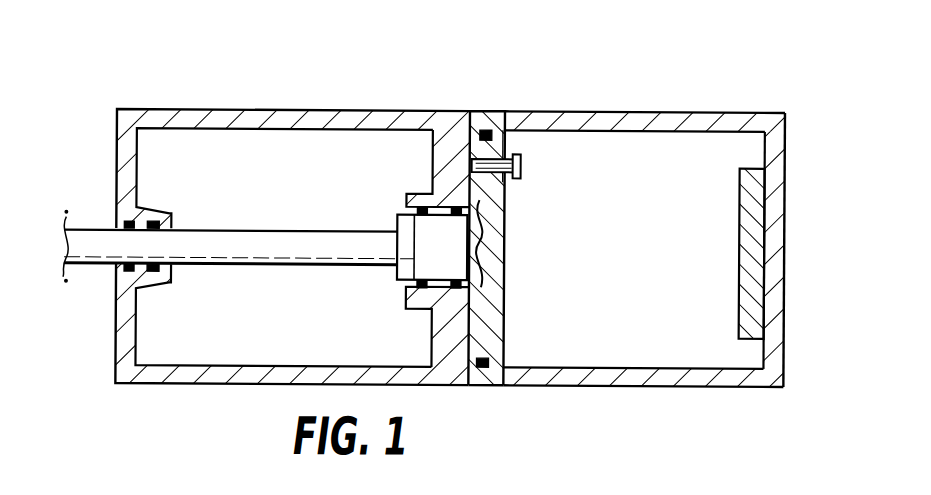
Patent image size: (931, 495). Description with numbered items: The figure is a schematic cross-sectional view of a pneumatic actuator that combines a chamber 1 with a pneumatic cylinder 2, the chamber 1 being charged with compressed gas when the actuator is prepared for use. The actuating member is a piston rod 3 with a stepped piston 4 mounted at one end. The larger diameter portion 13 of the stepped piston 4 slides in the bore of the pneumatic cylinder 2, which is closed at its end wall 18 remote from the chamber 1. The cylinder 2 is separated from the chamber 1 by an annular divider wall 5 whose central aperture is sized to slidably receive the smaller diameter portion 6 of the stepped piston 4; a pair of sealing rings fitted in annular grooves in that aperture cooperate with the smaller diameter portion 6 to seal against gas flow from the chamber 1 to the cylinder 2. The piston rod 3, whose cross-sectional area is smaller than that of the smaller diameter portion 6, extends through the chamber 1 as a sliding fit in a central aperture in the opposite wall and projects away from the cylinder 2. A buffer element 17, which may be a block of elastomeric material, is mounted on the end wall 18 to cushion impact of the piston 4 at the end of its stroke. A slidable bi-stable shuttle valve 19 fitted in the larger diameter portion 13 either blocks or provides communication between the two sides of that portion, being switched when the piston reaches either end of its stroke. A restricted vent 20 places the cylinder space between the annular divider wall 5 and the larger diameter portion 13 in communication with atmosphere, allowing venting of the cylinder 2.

The chamber 1 is at (242, 162).
The pneumatic cylinder 2 is at (627, 164).
The piston rod 3 is at (320, 240).
The stepped piston 4 is at (500, 205).
The annular divider wall 5 is at (455, 167).
The smaller diameter portion 6 is at (437, 253).
The larger diameter portion 13 is at (483, 305).
The buffer element 17 is at (743, 271).
The end wall 18 is at (777, 168).
The shuttle valve 19 is at (494, 157).
The restricted vent 20 is at (468, 119).